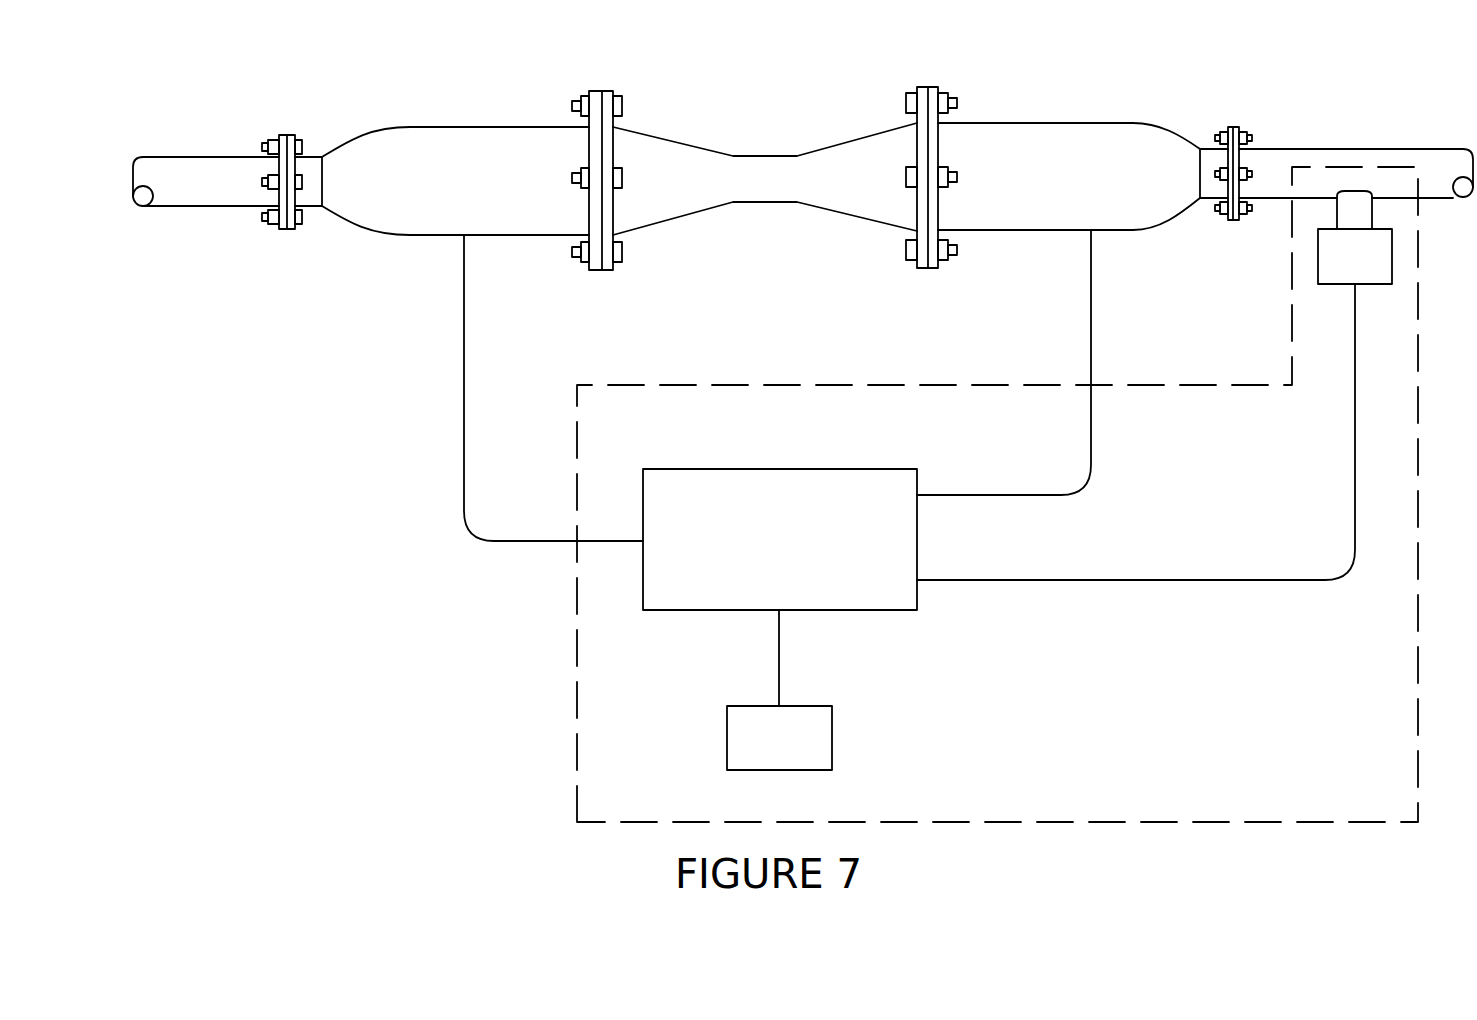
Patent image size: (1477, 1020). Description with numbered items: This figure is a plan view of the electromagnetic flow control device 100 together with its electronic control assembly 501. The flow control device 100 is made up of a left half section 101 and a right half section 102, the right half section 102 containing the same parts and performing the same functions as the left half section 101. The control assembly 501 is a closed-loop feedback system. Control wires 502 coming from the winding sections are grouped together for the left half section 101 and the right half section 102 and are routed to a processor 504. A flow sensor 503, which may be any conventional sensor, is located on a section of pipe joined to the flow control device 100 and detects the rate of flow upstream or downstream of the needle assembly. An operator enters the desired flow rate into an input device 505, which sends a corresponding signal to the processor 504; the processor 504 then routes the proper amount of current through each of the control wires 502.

The electromagnetic flow control device 100 is at (818, 70).
The left half section 101 is at (477, 127).
The right half section 102 is at (1043, 125).
The control assembly 501 is at (547, 645).
The control wires 502 is at (464, 370).
The flow sensor 503 is at (1154, 385).
The processor 504 is at (780, 539).
The input device 505 is at (779, 690).